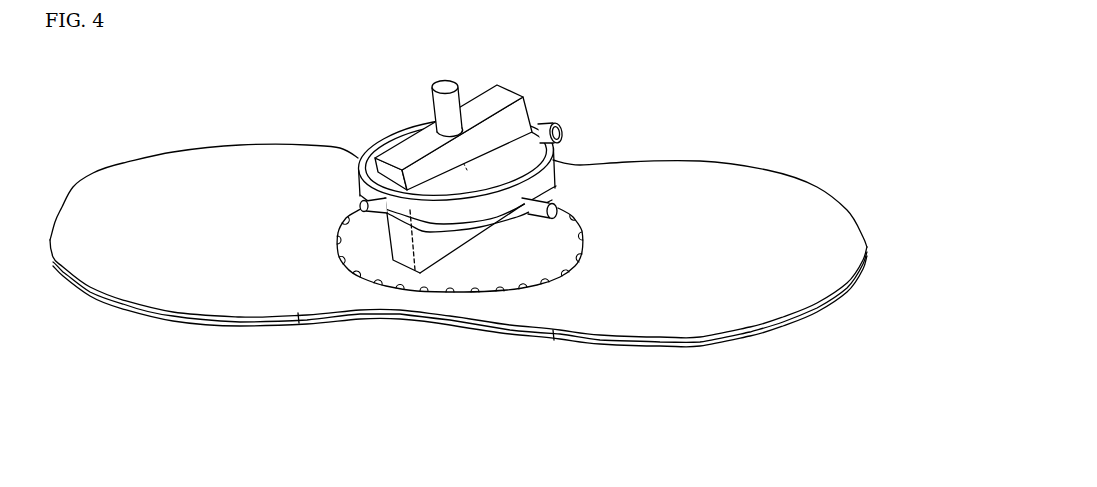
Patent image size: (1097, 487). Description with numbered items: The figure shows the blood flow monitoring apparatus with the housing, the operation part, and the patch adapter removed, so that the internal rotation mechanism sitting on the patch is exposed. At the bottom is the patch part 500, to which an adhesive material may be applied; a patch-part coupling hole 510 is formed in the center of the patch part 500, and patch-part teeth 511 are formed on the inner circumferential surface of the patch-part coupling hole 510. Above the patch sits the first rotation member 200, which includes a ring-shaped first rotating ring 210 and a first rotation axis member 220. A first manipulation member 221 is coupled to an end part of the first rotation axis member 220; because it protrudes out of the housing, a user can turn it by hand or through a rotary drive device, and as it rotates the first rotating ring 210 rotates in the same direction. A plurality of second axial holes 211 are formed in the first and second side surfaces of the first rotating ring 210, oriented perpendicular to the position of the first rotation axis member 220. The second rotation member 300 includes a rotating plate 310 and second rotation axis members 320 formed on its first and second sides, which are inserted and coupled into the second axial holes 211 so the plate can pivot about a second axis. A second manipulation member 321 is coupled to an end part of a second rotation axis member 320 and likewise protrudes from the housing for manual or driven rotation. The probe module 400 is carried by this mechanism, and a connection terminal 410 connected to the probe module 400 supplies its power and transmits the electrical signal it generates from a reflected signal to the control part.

The first rotation member 200 is at (626, 145).
The first rotating ring 210 is at (558, 158).
The second axial hole 211 is at (450, 137).
The first rotation axis member 220 is at (358, 172).
The first manipulation member 221 is at (563, 128).
The second rotation member 300 is at (667, 290).
The rotating plate 310 is at (413, 245).
The second rotation axis member 320 is at (473, 180).
The second manipulation member 321 is at (550, 197).
The probe module 400 is at (524, 96).
The connection terminal 410 is at (463, 104).
The patch part 500 is at (657, 192).
The patch-part coupling hole 510 is at (333, 248).
The patch-part teeth 511 is at (580, 260).